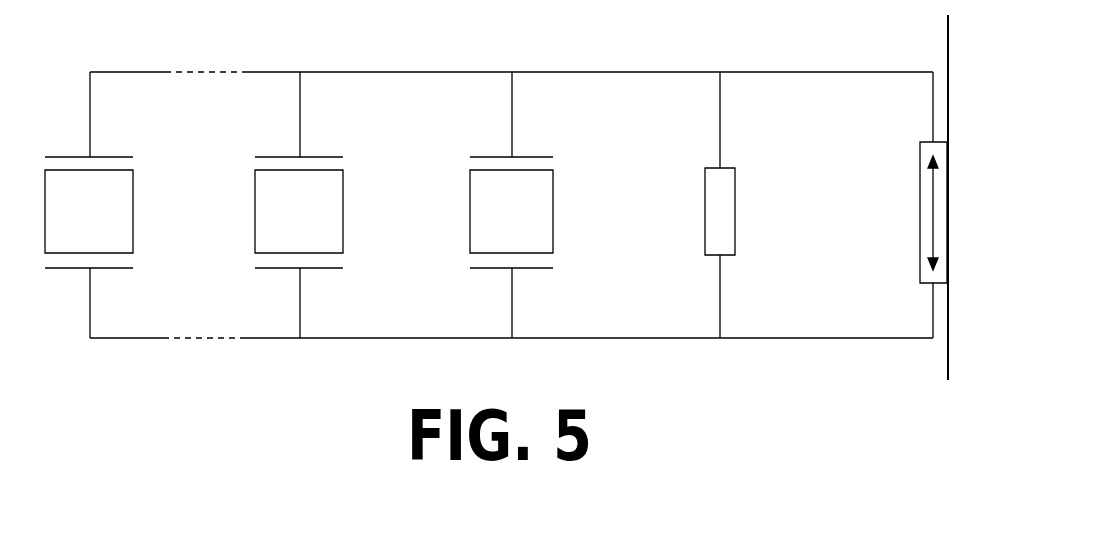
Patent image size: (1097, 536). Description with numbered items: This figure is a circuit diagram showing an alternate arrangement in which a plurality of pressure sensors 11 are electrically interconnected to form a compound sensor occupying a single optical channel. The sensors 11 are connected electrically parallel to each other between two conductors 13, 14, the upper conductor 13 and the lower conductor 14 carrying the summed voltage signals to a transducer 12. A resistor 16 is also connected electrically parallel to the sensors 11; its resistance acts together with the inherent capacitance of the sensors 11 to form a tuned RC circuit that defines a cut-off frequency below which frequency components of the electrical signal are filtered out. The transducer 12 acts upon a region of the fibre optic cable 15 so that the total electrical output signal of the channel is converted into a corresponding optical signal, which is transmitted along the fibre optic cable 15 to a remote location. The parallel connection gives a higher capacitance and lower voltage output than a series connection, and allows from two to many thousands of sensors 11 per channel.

The sensor 11 is at (133, 218).
The transducer 12 is at (918, 210).
The conductor 13 is at (645, 70).
The conductor 14 is at (745, 340).
The fibre optic cable 15 is at (945, 50).
The resistor 16 is at (725, 218).